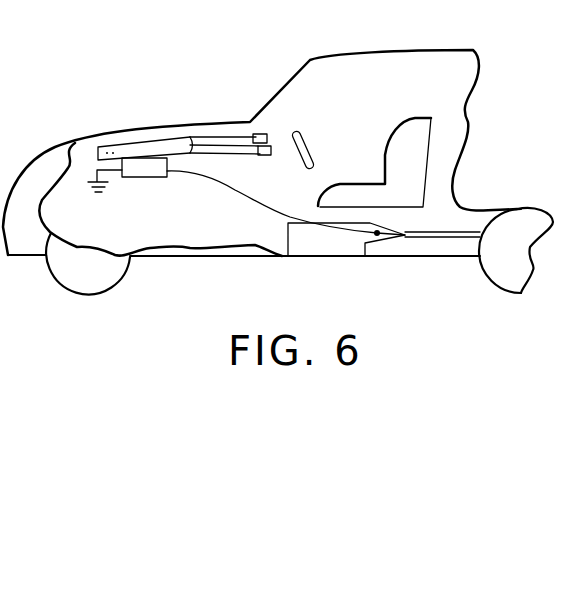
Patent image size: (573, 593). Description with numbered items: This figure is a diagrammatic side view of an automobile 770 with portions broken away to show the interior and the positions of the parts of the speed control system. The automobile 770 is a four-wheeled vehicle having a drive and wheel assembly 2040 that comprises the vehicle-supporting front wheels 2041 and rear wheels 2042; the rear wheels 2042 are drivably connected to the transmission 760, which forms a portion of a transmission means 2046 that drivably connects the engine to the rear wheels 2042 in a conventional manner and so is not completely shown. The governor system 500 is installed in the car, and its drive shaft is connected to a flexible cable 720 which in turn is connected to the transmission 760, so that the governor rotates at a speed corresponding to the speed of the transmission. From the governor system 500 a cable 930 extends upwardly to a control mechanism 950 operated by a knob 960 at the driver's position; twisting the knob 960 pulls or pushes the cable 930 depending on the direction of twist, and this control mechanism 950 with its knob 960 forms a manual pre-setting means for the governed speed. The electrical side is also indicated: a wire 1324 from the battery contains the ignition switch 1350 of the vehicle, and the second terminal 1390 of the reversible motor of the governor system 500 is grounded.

The governor system 500 is at (136, 154).
The cable 930 is at (190, 133).
The wire 1324 is at (243, 146).
The ignition switch 1350 is at (259, 133).
The knob 960 is at (274, 152).
The control mechanism 950 is at (263, 156).
The second terminal of the motor 1390 is at (119, 178).
The flexible cable 720 is at (252, 201).
The automobile 770 is at (338, 54).
The drive and wheel assembly 2040 is at (331, 221).
The transmission means 2046 is at (387, 220).
The transmission 760 is at (375, 243).
The front wheels 2041 is at (123, 282).
The rear wheels 2042 is at (490, 277).